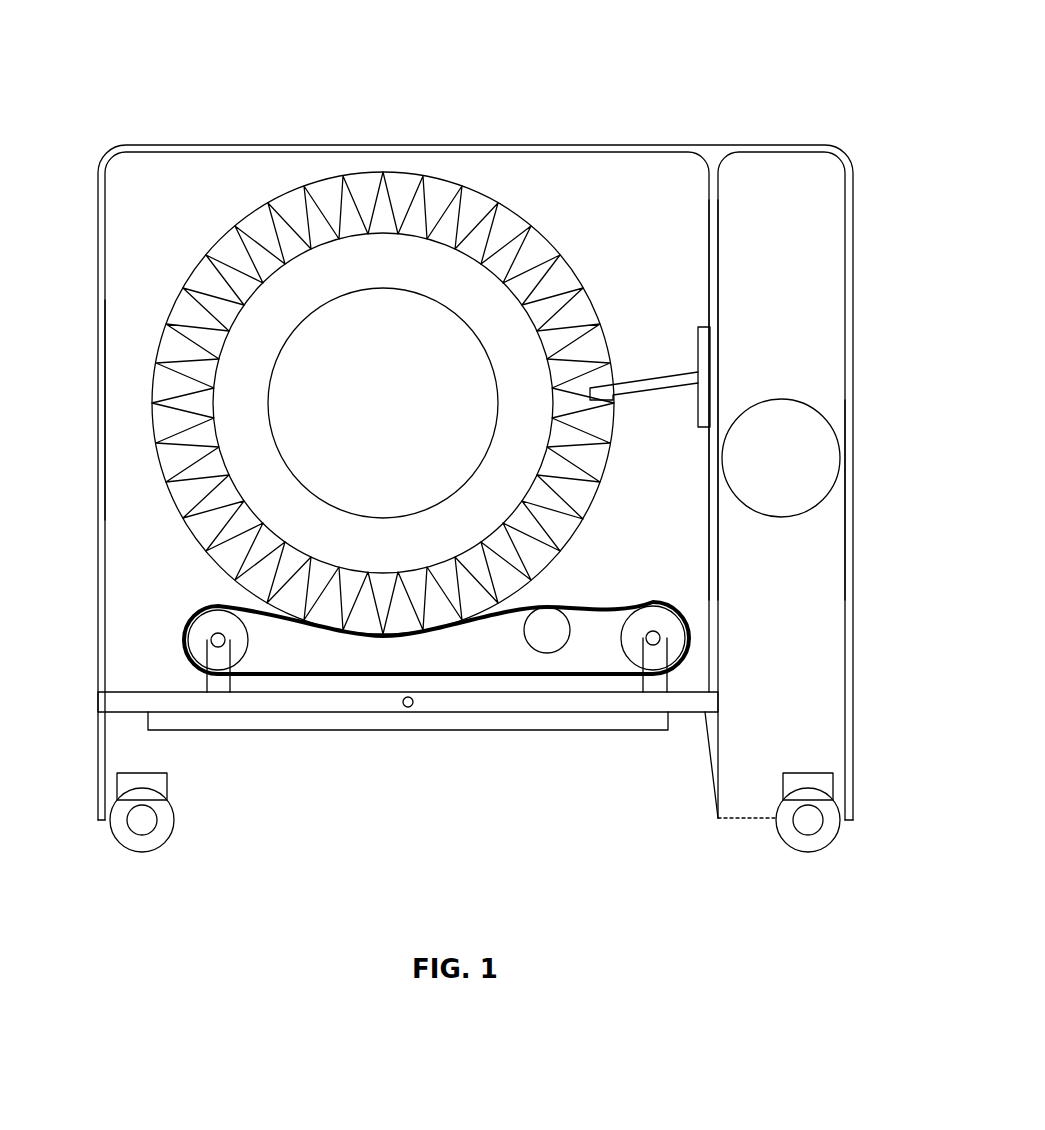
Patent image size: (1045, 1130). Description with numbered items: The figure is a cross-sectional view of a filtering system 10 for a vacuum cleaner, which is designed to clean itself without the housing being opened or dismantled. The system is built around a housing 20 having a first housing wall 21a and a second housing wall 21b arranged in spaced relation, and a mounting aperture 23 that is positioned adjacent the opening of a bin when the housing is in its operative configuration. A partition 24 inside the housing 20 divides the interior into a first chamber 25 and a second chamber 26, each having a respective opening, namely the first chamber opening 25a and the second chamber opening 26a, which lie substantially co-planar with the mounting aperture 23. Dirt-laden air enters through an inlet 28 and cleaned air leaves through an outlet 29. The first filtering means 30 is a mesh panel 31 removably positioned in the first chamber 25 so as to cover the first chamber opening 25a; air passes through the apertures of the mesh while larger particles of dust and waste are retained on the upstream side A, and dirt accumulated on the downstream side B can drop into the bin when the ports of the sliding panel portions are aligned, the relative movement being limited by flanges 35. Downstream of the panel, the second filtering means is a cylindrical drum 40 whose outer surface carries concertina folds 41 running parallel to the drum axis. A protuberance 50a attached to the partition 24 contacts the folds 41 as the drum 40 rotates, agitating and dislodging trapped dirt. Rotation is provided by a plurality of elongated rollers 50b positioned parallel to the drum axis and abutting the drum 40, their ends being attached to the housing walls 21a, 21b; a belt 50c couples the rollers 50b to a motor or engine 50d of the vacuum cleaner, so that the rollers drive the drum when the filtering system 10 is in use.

The filtering system 10 is at (755, 40).
The housing 20 is at (163, 145).
The first housing wall 21a is at (128, 506).
The second housing wall 21b is at (840, 567).
The mounting aperture 23 is at (457, 766).
The partition 24 is at (722, 278).
The first chamber 25 is at (130, 211).
The first chamber opening 25a is at (199, 784).
The second chamber 26 is at (776, 172).
The second chamber opening 26a is at (743, 804).
The inlet 28 is at (825, 457).
The outlet 29 is at (368, 417).
The first filtering means 30 is at (121, 722).
The panel 31 is at (105, 700).
The flanges 35 is at (240, 720).
The cylindrical drum 40 is at (383, 367).
The concertina folds 41 is at (322, 185).
The protuberance 50a is at (648, 372).
The rollers 50b is at (200, 640).
The belt 50c is at (605, 672).
The motor or engine 50d is at (665, 630).
The upstream side A is at (402, 762).
The downstream side B is at (437, 680).